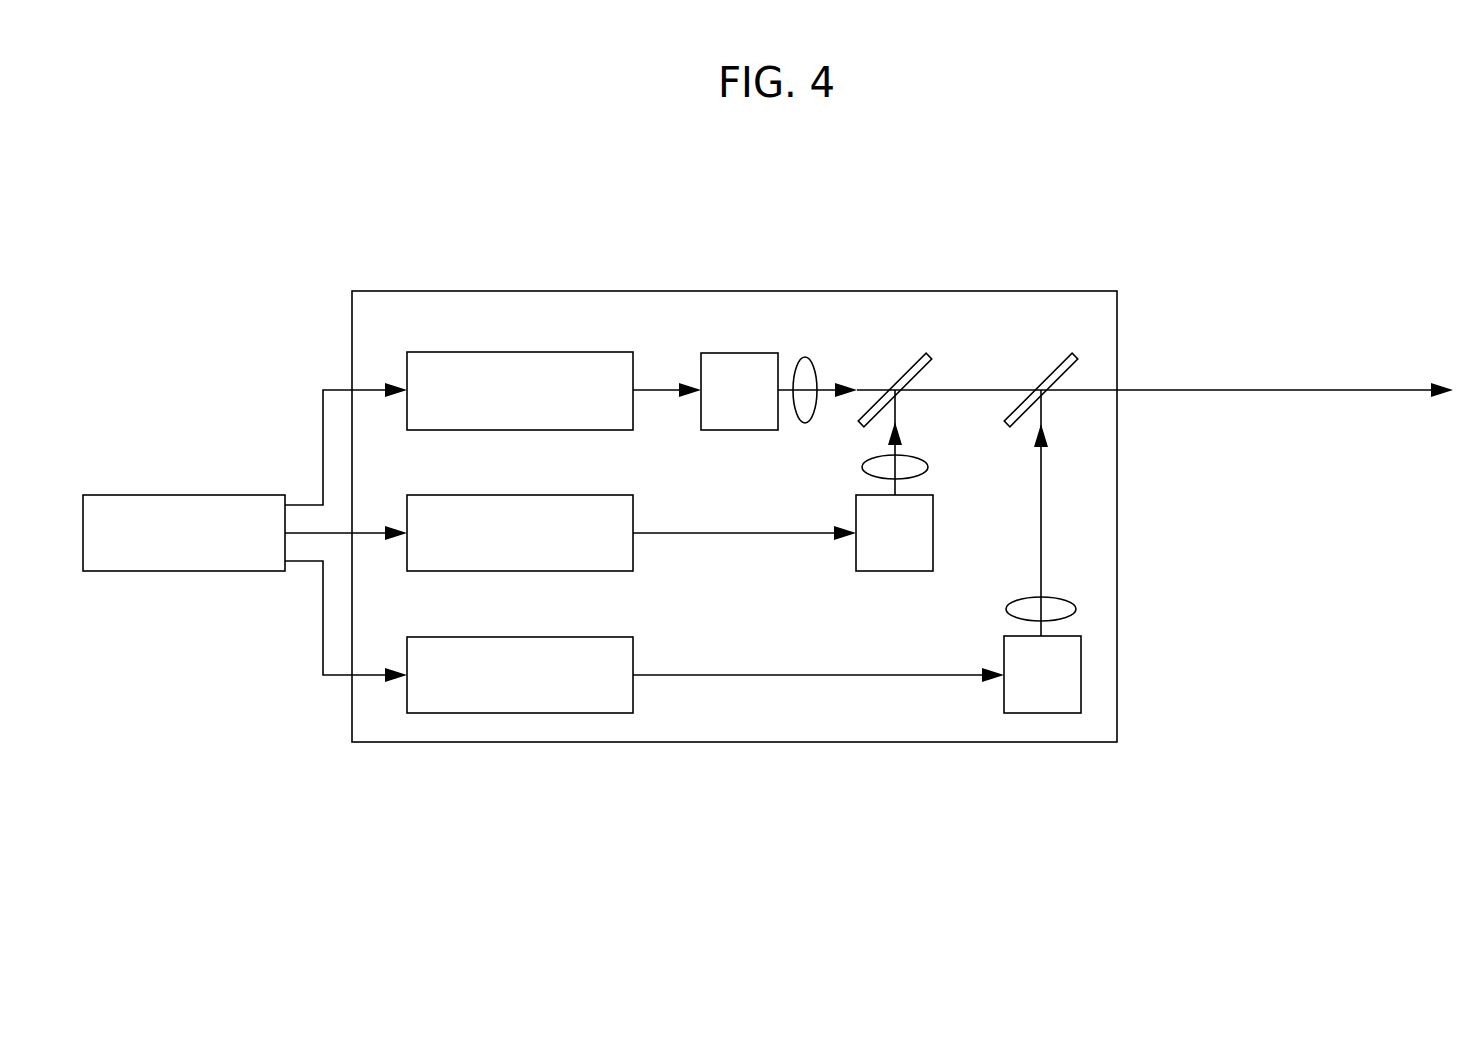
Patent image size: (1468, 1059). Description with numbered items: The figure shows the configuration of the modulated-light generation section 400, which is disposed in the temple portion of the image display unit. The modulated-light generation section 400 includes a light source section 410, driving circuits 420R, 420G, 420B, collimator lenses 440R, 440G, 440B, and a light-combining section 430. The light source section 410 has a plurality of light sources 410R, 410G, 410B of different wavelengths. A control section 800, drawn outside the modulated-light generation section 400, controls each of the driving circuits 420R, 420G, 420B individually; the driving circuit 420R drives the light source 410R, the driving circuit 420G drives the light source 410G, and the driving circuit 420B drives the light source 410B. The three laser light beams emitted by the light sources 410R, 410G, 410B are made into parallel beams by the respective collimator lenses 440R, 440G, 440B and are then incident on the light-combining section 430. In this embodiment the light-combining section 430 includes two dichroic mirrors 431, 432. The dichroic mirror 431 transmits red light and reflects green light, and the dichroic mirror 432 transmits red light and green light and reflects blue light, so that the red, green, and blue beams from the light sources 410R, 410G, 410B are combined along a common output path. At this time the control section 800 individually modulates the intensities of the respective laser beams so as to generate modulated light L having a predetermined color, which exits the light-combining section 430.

The modulated-light generation section 400 is at (441, 158).
The control section 800 is at (198, 495).
The driving circuit 420R is at (547, 352).
The driving circuit 420G is at (547, 495).
The driving circuit 420B is at (547, 637).
The light source section 410 is at (920, 611).
The light source 410R is at (742, 430).
The light source 410G is at (905, 571).
The light source 410B is at (1068, 731).
The collimator lens 440R is at (800, 357).
The collimator lens 440G is at (928, 463).
The collimator lens 440B is at (1076, 606).
The light-combining section 430 is at (962, 309).
The dichroic mirror 431 is at (893, 350).
The dichroic mirror 432 is at (1039, 328).
The modulated light L is at (1266, 390).